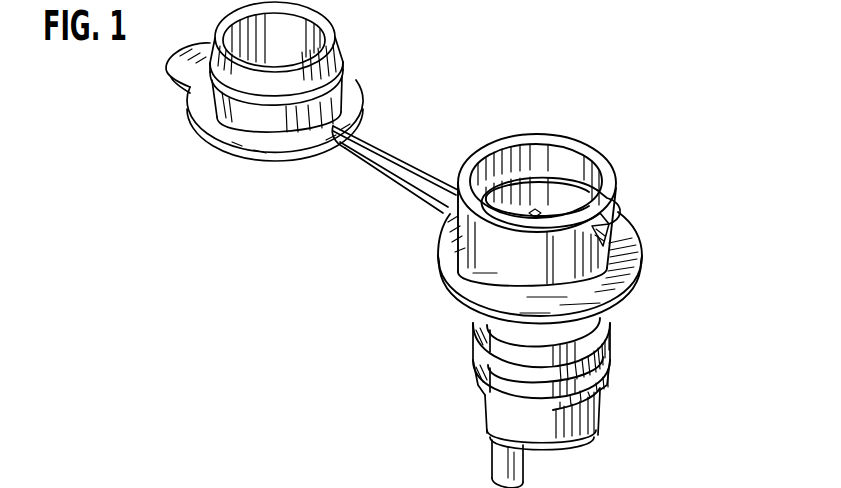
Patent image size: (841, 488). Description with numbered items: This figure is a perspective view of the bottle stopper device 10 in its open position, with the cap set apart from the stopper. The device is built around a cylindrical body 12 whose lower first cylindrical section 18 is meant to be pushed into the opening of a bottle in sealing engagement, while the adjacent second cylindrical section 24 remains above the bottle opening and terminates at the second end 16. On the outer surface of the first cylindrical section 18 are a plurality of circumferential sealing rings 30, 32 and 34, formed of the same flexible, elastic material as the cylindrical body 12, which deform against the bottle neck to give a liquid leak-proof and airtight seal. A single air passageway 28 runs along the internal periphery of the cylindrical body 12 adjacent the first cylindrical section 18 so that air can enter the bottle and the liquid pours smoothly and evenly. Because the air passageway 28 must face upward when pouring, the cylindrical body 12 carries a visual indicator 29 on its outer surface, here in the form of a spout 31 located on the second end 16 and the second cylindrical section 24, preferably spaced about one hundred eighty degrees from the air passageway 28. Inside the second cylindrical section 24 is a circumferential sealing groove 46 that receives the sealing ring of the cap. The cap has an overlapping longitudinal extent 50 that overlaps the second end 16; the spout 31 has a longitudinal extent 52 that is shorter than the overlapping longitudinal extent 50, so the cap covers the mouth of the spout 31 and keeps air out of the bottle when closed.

The bottle stopper device 10 is at (376, 195).
The cylindrical body 12 is at (636, 365).
The second end 16 is at (600, 152).
The first cylindrical section 18 is at (484, 408).
The second cylindrical section 24 is at (636, 185).
The air passageway 28 is at (525, 470).
The visual indicator 29 is at (606, 216).
The circumferential sealing ring 30 is at (610, 314).
The spout 31 is at (604, 222).
The circumferential sealing ring 32 is at (613, 333).
The circumferential sealing ring 34 is at (610, 378).
The circumferential sealing groove 46 is at (552, 168).
The overlapping longitudinal extent 50 is at (174, 86).
The longitudinal extent 52 is at (613, 240).